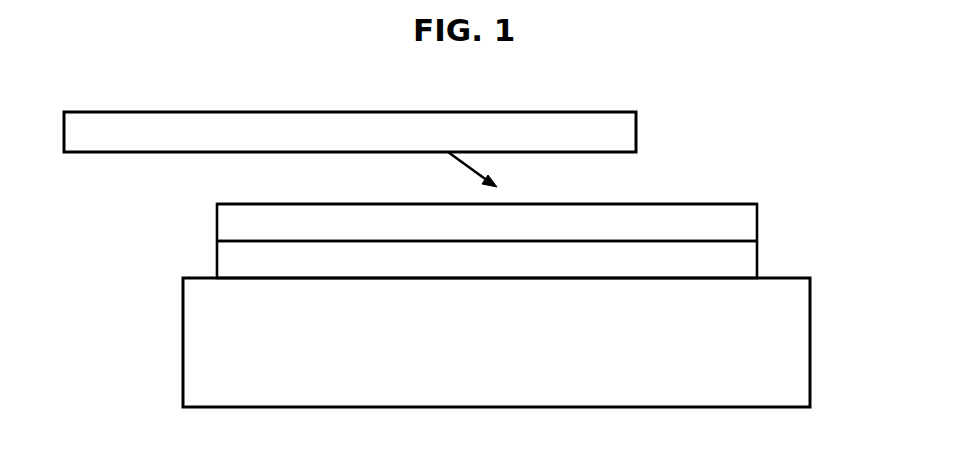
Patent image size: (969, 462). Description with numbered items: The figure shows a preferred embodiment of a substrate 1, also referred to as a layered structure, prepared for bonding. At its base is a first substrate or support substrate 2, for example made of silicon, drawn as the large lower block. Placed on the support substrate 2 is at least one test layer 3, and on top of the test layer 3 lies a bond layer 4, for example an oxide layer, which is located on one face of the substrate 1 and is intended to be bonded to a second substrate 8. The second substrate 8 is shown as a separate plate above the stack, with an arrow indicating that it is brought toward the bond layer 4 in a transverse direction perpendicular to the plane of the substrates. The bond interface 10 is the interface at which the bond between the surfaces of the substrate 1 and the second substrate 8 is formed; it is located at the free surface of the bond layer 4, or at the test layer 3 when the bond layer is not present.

The substrate 1 is at (121, 338).
The support substrate 2 is at (804, 343).
The test layer 3 is at (751, 261).
The bond layer 4 is at (751, 224).
The second substrate 8 is at (573, 128).
The bond interface 10 is at (724, 204).